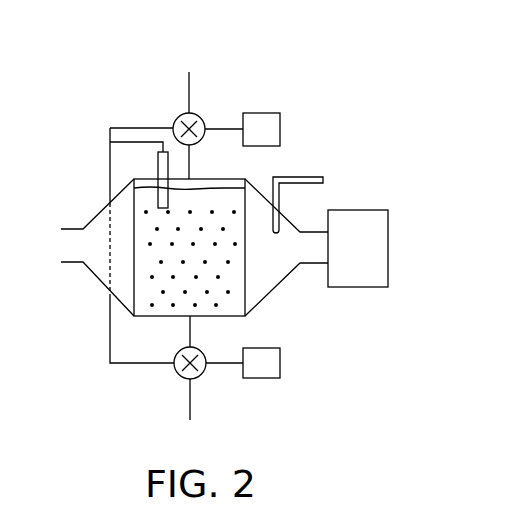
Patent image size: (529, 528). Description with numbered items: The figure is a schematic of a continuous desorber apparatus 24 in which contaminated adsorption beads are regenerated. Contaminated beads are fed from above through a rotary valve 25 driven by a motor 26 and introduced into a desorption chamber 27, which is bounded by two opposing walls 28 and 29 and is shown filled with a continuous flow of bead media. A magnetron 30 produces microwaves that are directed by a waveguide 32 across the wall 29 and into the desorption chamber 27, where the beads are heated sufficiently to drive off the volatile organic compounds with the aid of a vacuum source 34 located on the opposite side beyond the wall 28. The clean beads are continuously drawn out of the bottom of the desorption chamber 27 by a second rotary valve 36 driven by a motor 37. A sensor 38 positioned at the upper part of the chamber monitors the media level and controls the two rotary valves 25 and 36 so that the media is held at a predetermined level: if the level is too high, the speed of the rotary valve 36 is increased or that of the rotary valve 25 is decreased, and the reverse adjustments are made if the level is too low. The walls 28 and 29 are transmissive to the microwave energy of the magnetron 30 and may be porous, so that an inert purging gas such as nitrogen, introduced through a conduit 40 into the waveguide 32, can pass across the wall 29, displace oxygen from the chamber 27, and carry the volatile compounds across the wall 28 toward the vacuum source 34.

The electroless plating apparatus 24 is at (251, 44).
The rotary valve 25 is at (176, 113).
The motor 26 is at (268, 113).
The desorption chamber 27 is at (200, 218).
The wall 28 is at (134, 289).
The wall 29 is at (245, 295).
The magnetron 30 is at (353, 270).
The waveguide 32 is at (288, 232).
The vacuum source 34 is at (83, 225).
The rotary valve 36 is at (182, 377).
The motor 37 is at (256, 378).
The sensor 38 is at (157, 162).
The conduit 40 is at (300, 177).